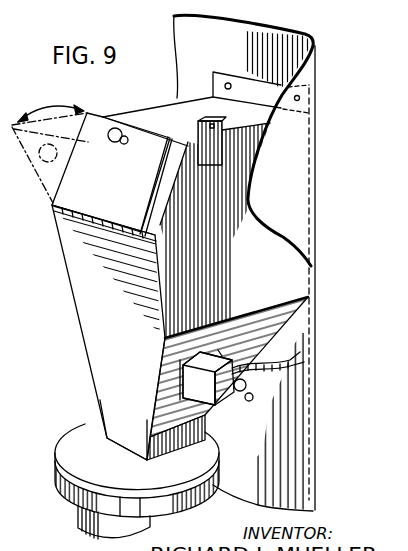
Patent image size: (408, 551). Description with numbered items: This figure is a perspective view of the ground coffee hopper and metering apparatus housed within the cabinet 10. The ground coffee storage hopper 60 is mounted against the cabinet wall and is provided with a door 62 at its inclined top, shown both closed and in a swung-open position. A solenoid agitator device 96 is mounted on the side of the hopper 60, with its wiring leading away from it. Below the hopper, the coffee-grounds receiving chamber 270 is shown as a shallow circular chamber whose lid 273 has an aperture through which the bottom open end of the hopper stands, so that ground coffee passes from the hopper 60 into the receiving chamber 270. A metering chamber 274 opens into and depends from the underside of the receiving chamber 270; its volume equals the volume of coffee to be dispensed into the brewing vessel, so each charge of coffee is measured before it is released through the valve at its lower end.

The cabinet 10 is at (212, 27).
The ground coffee storage hopper 60 is at (267, 266).
The door 62 is at (138, 143).
The solenoid agitator device 96 is at (217, 405).
The lid 273 is at (72, 440).
The coffee-grounds receiving chamber 270 is at (80, 491).
The metering chamber 274 is at (80, 530).